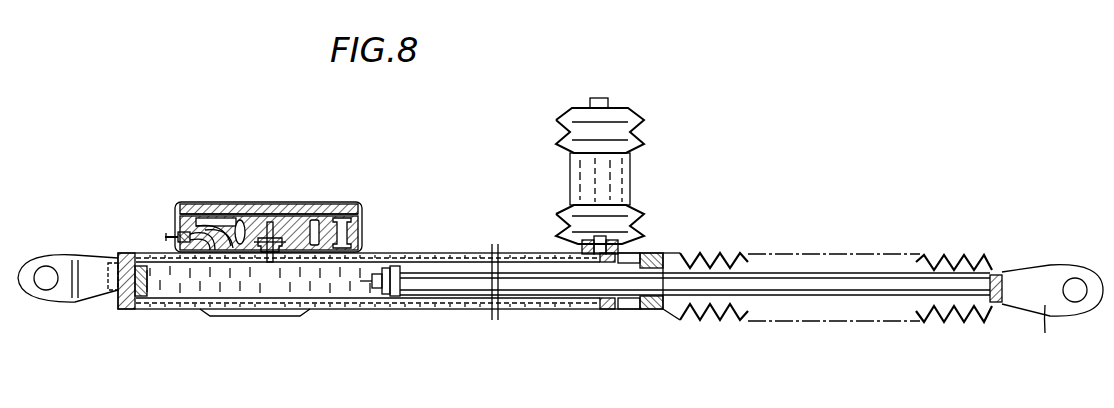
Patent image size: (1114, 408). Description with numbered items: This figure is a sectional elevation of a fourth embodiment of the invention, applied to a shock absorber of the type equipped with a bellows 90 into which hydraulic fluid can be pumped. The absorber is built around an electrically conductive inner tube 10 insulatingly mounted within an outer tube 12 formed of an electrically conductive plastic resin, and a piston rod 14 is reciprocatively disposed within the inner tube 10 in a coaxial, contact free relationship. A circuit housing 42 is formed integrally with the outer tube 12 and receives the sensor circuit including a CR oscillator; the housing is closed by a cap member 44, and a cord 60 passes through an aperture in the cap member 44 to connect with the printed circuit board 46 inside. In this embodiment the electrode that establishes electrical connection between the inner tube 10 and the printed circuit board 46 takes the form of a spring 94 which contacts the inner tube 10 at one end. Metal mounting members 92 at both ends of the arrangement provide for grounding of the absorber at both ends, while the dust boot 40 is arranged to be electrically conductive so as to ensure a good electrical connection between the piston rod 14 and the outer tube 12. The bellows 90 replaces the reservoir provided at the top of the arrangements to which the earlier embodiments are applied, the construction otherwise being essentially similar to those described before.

The inner tube member 10 is at (340, 300).
The outer tube member 12 is at (392, 300).
The piston rod 14 is at (458, 284).
The dust boot 40 is at (722, 300).
The circuit housing 42 is at (360, 226).
The cap member 44 is at (265, 205).
The printed circuit board 46 is at (200, 216).
The cord 60 is at (165, 236).
The bellows 90 is at (553, 189).
The metal mounting members 92 is at (95, 293).
The spring 94 is at (270, 262).